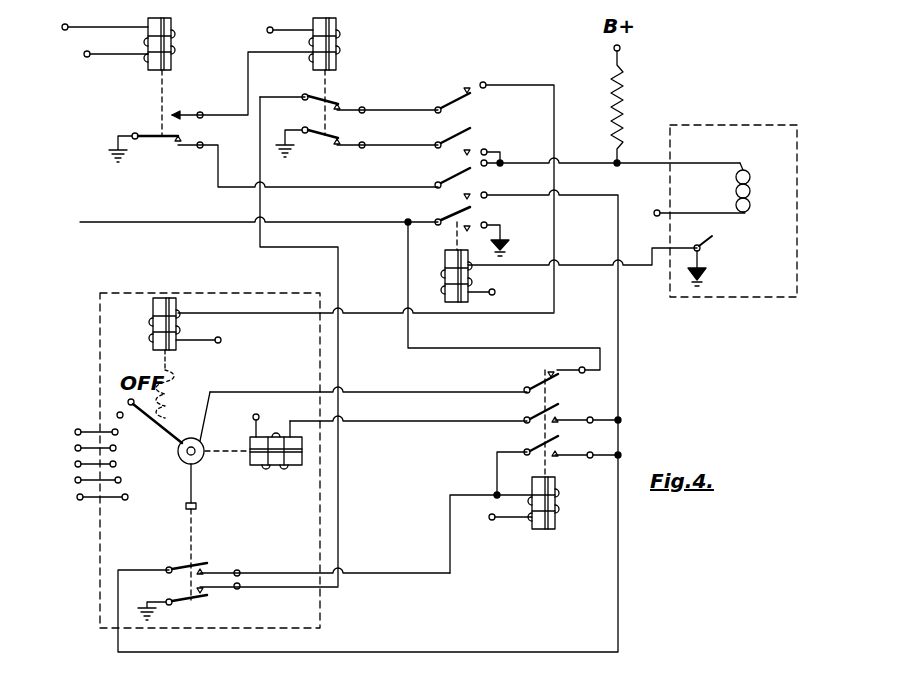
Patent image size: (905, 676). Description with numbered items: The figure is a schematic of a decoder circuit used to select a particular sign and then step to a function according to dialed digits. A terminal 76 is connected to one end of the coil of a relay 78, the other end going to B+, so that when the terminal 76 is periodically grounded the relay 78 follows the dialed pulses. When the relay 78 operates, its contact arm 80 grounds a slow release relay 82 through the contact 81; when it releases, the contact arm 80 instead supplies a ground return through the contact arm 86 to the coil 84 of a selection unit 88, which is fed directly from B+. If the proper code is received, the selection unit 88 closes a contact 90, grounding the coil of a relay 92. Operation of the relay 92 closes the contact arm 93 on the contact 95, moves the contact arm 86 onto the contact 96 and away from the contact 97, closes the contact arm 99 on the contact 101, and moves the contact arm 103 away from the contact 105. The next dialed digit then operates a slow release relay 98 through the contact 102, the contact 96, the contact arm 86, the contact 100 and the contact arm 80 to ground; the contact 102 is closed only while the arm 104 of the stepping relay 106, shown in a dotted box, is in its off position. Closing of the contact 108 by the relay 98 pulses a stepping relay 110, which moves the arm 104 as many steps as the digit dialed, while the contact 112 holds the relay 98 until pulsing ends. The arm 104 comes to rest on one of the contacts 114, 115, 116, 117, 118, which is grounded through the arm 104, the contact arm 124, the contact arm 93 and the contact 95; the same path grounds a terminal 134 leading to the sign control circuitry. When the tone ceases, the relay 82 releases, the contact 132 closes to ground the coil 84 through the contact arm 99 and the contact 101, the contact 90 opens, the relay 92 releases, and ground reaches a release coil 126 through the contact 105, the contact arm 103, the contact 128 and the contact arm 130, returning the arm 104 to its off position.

The terminal 76 is at (63, 27).
The relay 78 is at (174, 42).
The contact arm 80 is at (148, 142).
The contact 81 is at (174, 114).
The relay 82 is at (338, 38).
The coil 84 is at (770, 160).
The contact arm 86 is at (438, 182).
The selection unit 88 is at (736, 126).
The contact 90 is at (708, 254).
The relay 92 is at (446, 259).
The contact arm 93 is at (438, 218).
The contact 95 is at (490, 223).
The contact 96 is at (490, 193).
The contact 97 is at (502, 162).
The relay 98 is at (560, 492).
The contact arm 99 is at (440, 139).
The contact 100 is at (172, 146).
The contact 101 is at (472, 148).
The contact 102 is at (187, 566).
The contact arm 103 is at (464, 86).
The movable arm 104 is at (178, 452).
The contact 105 is at (472, 82).
The stepping relay 106 is at (100, 333).
The contact 108 is at (527, 419).
The relay 110 is at (272, 466).
The contact 112 is at (527, 450).
The contact 114 is at (80, 430).
The contact 115 is at (75, 432).
The contact 116 is at (75, 449).
The contact 117 is at (75, 465).
The contact 118 is at (77, 482).
The contact arm 124 is at (532, 387).
The release coil 126 is at (153, 323).
The contact 128 is at (336, 95).
The contact arm 130 is at (206, 598).
The contact 132 is at (308, 140).
The terminal 134 is at (96, 200).